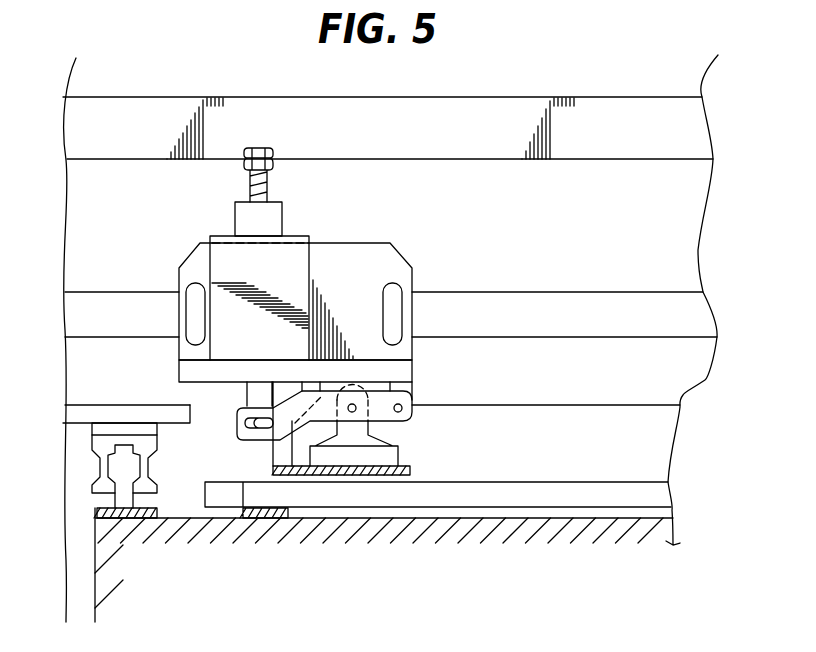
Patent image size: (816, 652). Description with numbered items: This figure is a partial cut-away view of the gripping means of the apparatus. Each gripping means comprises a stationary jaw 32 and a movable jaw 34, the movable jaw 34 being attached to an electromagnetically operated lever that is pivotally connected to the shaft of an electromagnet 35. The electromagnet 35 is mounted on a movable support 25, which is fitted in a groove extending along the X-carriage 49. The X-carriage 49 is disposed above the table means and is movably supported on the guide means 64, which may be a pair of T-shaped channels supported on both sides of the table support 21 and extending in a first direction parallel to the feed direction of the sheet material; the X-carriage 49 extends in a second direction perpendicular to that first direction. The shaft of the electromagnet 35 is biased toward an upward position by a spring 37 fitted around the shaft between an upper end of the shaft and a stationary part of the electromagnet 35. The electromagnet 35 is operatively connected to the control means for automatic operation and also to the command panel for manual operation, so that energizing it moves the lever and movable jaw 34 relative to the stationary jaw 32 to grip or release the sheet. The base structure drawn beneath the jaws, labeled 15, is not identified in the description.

The X-carriage 49 is at (655, 130).
The spring 37 is at (248, 185).
The electromagnet 35 is at (303, 277).
The movable support 25 is at (407, 373).
The movable jaw 34 is at (400, 437).
The stationary jaw 32 is at (400, 452).
The support plate 15 is at (510, 462).
The table support 21 is at (400, 463).
The guide means 64 is at (117, 463).